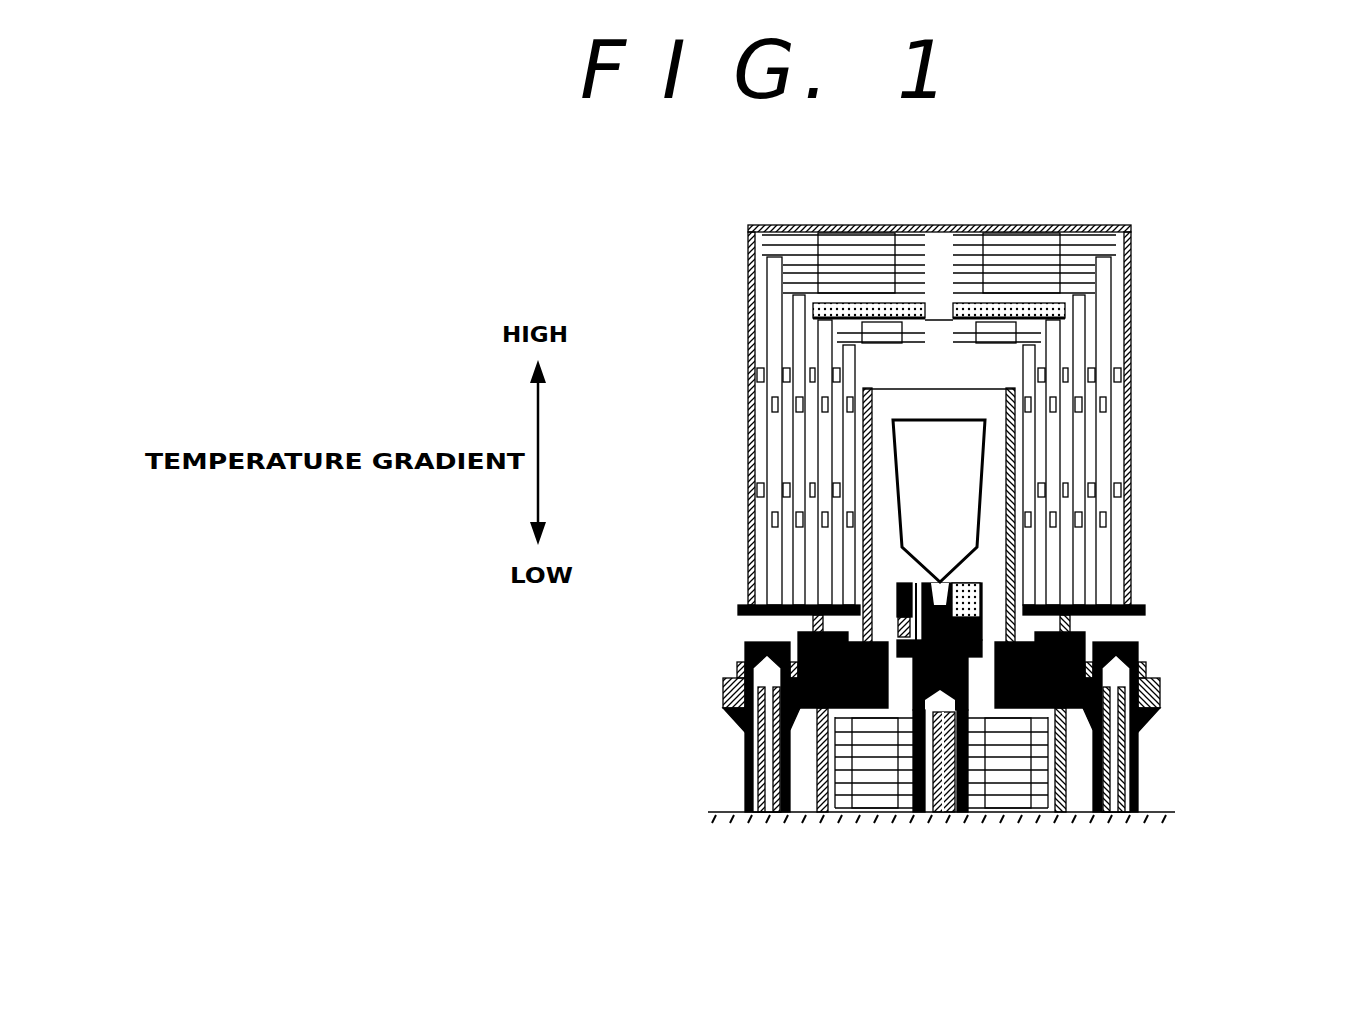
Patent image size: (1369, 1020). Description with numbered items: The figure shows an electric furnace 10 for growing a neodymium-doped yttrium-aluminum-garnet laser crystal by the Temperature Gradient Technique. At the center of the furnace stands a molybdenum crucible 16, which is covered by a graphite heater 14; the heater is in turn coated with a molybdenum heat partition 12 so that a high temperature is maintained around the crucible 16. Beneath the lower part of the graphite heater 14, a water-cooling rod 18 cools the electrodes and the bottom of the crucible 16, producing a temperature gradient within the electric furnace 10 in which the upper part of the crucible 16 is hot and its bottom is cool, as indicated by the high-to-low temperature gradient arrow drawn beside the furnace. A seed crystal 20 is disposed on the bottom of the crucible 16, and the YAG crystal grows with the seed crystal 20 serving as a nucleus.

The electric furnace 10 is at (1096, 200).
The molybdenum heat partition 12 is at (1133, 410).
The graphite heater 14 is at (1082, 348).
The molybdenum crucible 16 is at (985, 520).
The water-cooling rod 18 is at (965, 715).
The seed crystal 20 is at (968, 600).